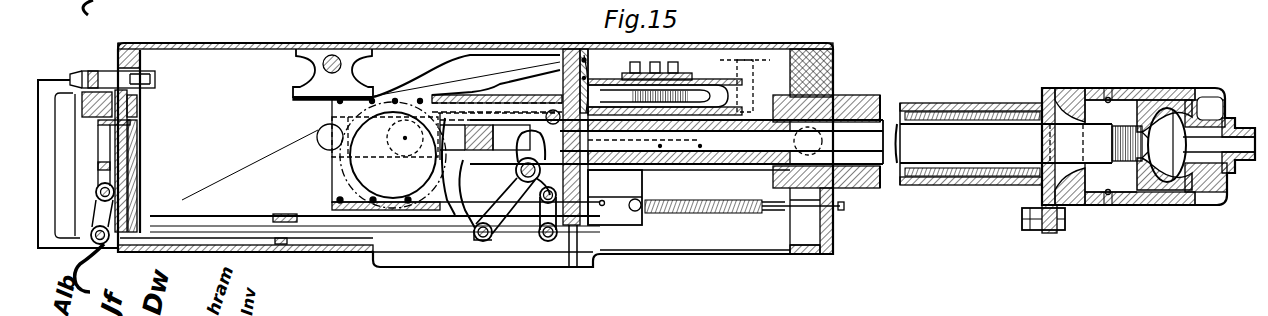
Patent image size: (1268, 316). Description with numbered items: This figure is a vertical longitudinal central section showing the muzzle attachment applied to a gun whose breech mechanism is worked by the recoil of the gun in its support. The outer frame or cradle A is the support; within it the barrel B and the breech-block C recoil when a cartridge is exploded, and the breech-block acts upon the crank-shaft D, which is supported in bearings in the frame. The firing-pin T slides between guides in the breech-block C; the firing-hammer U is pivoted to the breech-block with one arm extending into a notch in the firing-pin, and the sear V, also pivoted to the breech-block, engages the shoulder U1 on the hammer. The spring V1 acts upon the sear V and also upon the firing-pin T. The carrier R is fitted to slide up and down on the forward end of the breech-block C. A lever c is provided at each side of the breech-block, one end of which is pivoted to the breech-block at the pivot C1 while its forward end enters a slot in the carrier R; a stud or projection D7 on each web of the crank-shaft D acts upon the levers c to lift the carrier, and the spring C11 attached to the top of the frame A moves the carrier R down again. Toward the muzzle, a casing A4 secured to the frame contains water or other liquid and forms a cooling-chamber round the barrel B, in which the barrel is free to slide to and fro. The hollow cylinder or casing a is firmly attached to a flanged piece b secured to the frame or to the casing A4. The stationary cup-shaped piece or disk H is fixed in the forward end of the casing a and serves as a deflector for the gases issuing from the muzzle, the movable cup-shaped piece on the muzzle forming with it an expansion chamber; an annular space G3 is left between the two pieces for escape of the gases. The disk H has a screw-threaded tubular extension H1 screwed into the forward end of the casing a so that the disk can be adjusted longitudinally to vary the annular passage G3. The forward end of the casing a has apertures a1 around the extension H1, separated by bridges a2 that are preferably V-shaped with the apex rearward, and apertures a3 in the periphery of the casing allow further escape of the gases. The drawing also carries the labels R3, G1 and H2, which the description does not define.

The outer frame or cradle A is at (760, 46).
The casing A4 is at (925, 104).
The barrel B is at (806, 145).
The breech-block C is at (513, 101).
The lever pivot C1 is at (262, 151).
The spring C11 is at (467, 76).
The lever c is at (472, 84).
The crank-shaft D is at (398, 148).
The stud or projection D7 is at (490, 87).
The firing-pin T is at (485, 136).
The firing-hammer U is at (513, 183).
The shoulder U1 is at (527, 203).
The sear V is at (555, 182).
The spring V1 is at (525, 198).
The carrier R is at (572, 48).
The plate spring R3 is at (580, 50).
The hollow cylinder or casing a is at (1155, 92).
The apertures a1 is at (1220, 100).
The bridges a2 is at (1222, 198).
The peripheral apertures a3 is at (1110, 95).
The flanged piece b is at (1050, 233).
The ball valve G1 is at (1167, 145).
The annular space G3 is at (1192, 98).
The cup-shaped piece or disk H is at (1215, 144).
The extension H1 is at (1236, 121).
The nozzle tip lower H2 is at (1238, 165).